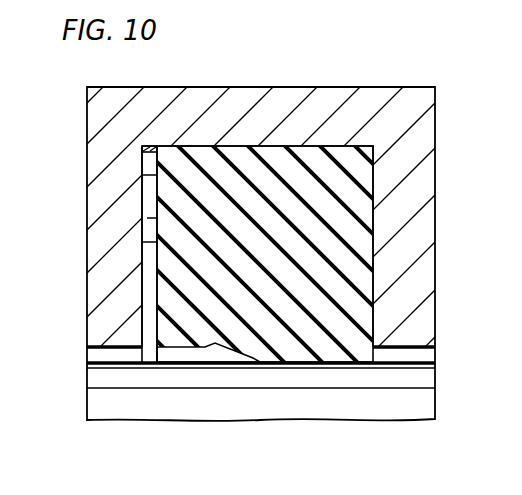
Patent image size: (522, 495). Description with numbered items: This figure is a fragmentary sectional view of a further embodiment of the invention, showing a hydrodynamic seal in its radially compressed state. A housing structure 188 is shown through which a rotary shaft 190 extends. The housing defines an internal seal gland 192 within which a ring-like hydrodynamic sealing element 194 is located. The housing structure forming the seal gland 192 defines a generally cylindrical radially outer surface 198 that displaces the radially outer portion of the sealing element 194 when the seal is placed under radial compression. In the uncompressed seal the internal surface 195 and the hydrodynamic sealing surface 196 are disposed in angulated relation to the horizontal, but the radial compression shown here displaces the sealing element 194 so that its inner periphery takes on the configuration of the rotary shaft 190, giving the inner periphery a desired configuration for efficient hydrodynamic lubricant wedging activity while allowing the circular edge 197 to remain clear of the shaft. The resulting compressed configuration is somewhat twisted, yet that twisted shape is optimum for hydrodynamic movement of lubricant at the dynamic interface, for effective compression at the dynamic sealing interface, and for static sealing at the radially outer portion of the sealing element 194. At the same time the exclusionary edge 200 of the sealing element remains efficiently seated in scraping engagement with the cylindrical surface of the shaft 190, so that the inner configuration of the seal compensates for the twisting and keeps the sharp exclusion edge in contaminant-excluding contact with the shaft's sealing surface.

The housing structure 188 is at (333, 100).
The hydrodynamic sealing element 194 is at (333, 173).
The seal gland 192 is at (143, 244).
The radially outer surface 198 is at (143, 159).
The rotary shaft 190 is at (103, 357).
The internal surface 195 is at (203, 348).
The hydrodynamic sealing surface 196 is at (311, 364).
The exclusionary edge 200 is at (380, 364).
The circular edge 197 is at (157, 353).